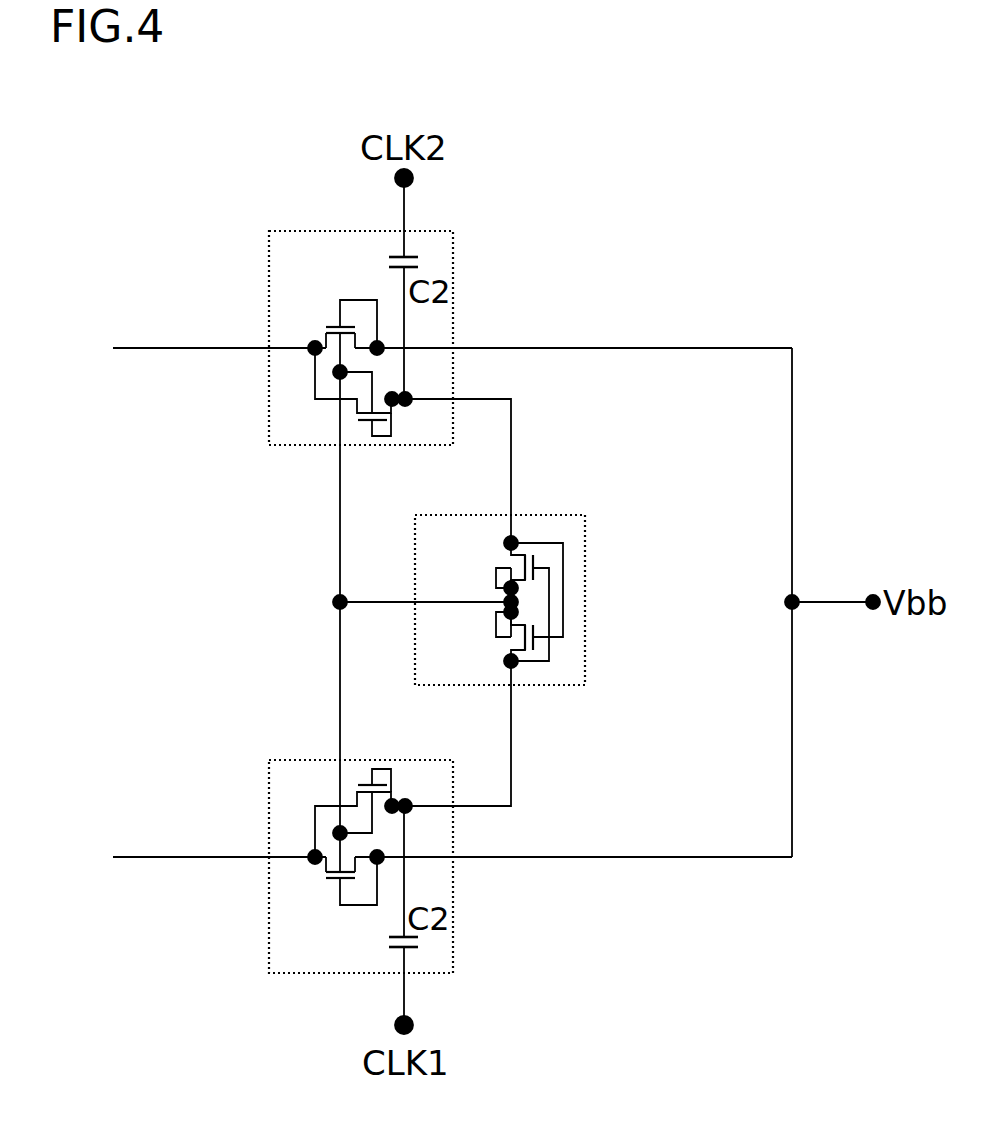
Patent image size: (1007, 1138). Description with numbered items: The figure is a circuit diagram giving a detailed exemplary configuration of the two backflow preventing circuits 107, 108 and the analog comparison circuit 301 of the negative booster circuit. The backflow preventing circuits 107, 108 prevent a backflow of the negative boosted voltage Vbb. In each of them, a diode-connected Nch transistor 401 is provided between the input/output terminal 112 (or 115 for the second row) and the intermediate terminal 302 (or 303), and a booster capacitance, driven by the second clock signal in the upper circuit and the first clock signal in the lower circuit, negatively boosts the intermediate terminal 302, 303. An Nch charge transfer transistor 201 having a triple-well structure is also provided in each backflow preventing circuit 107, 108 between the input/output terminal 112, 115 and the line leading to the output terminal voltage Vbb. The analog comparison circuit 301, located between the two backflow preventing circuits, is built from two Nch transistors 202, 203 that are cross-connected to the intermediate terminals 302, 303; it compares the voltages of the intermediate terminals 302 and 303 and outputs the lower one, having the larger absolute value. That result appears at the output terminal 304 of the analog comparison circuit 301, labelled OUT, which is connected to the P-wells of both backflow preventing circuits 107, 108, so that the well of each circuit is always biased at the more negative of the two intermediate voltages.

The backflow preventing circuit 107 is at (452, 257).
The backflow preventing circuit 108 is at (452, 948).
The input/output terminal 112 is at (170, 348).
The input/output terminal 115 is at (170, 857).
The Nch charge transfer transistor 201 is at (332, 326).
The Nch transistor 202 is at (535, 556).
The Nch transistor 203 is at (535, 650).
The analog comparison circuit 301 is at (562, 513).
The intermediate terminal 302 is at (513, 415).
The intermediate terminal 303 is at (513, 790).
The output terminal 304 is at (333, 602).
The diode-connected Nch transistor 401 is at (365, 421).